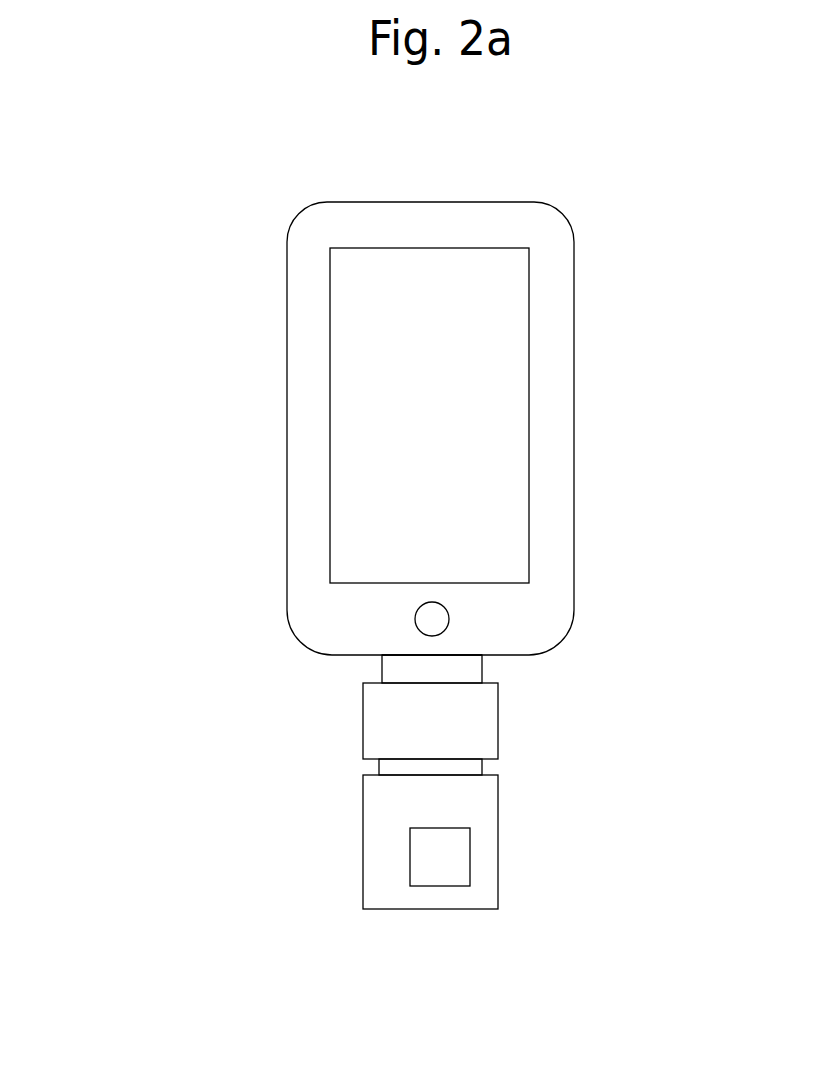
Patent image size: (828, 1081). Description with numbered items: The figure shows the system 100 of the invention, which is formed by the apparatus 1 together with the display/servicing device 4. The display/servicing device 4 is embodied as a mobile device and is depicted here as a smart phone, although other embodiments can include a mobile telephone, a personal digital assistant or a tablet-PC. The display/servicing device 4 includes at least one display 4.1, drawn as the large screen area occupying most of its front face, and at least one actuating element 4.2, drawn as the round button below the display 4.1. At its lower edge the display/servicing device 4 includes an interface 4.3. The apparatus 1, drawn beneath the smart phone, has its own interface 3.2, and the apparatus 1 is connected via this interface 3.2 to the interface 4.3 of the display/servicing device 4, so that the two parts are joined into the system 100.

The system 100 is at (146, 498).
The display/servicing device 4 is at (294, 285).
The display 4.1 is at (498, 380).
The actuating element 4.2 is at (438, 619).
The interface 4.3 is at (413, 643).
The apparatus 1 is at (283, 784).
The interface 3.2 is at (440, 669).